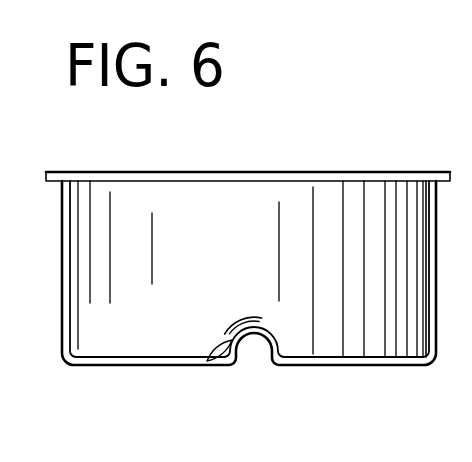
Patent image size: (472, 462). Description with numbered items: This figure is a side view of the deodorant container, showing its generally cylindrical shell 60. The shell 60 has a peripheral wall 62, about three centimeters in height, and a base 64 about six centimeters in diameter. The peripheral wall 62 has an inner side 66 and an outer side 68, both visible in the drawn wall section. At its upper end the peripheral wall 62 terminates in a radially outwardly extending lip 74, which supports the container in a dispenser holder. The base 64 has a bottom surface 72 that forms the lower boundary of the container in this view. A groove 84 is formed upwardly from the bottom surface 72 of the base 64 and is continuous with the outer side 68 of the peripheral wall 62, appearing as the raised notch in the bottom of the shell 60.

The shell 60 is at (186, 225).
The peripheral wall 62 is at (116, 302).
The base 64 is at (409, 366).
The inner side 66 is at (120, 217).
The outer side 68 is at (62, 220).
The bottom surface 72 is at (323, 365).
The lip 74 is at (330, 172).
The groove 84 is at (208, 362).